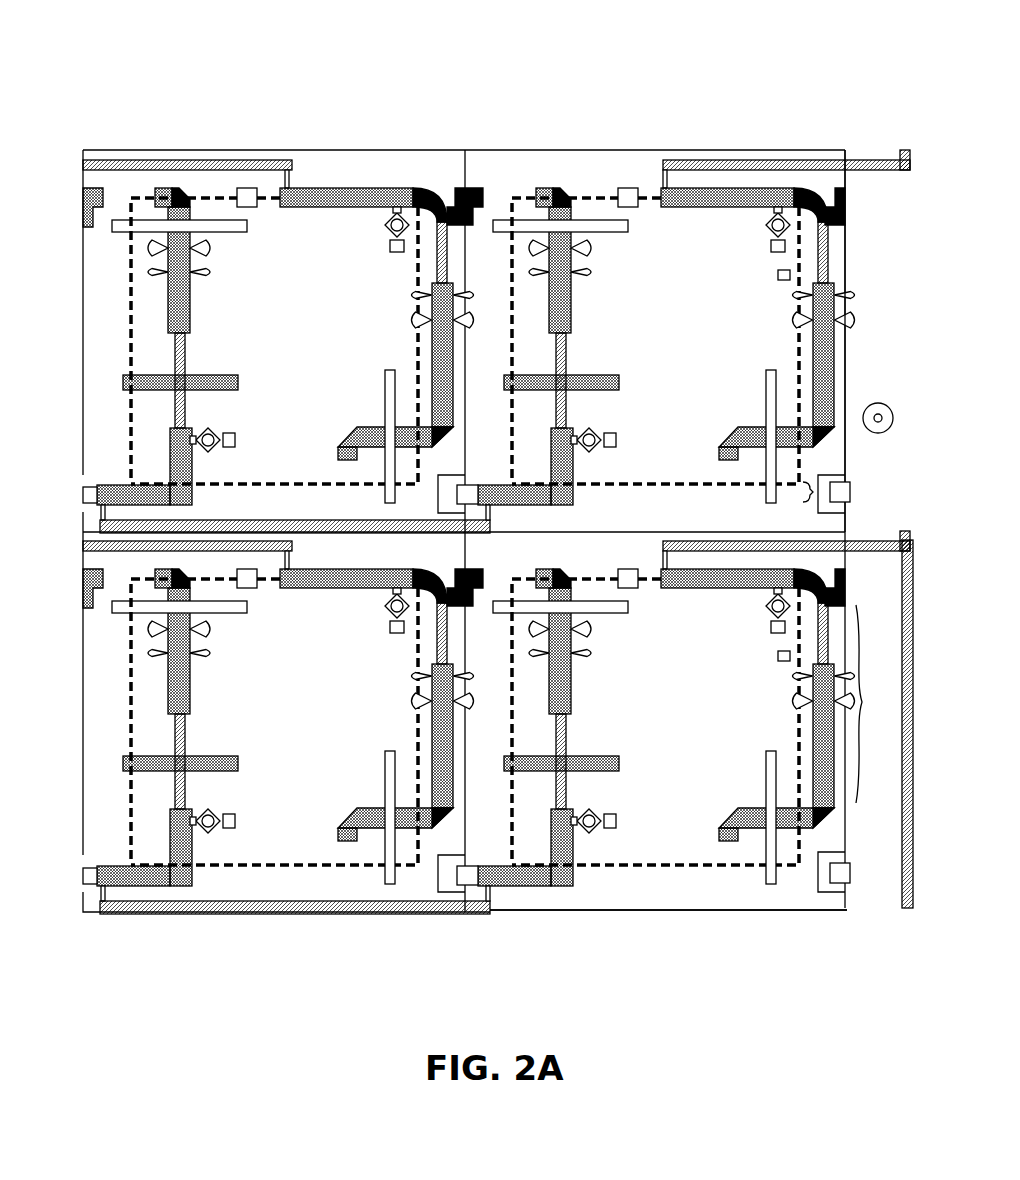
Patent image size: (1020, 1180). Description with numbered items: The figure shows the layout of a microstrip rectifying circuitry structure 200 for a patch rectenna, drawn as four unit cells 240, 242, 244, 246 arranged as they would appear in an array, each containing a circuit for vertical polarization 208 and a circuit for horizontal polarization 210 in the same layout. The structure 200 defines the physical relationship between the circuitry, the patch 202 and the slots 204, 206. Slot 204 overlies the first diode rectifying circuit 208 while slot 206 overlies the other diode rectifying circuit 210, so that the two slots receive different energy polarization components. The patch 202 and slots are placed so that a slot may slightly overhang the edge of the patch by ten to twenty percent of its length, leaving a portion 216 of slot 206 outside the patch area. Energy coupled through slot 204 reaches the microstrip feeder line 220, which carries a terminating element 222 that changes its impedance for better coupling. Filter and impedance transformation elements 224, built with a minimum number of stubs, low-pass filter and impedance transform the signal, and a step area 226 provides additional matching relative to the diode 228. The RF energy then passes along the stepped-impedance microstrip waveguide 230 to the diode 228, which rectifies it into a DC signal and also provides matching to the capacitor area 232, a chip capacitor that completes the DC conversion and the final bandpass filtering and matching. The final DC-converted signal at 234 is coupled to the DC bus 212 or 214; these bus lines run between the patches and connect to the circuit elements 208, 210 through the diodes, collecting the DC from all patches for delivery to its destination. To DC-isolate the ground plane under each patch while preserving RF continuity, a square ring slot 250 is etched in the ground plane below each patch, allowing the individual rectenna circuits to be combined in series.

The microstrip rectifying circuitry structure 200 is at (733, 43).
The patch 202 is at (288, 865).
The slot 204 is at (213, 220).
The slot 206 is at (392, 885).
The first diode rectifying circuit 208 is at (551, 172).
The diode rectifying circuit 210 is at (838, 250).
The DC bus 212 is at (783, 160).
The DC bus 214 is at (903, 820).
The overhanging portion of slot 216 is at (814, 490).
The microstrip feeder line 220 is at (170, 290).
The terminating element 222 is at (157, 188).
The filter and impedance transformation elements 224 is at (811, 722).
The step area 226 is at (172, 325).
The diode 228 is at (591, 832).
The microstrip waveguide 230 is at (177, 355).
The capacitor area 232 is at (631, 188).
The final DC-converted signal point 234 is at (492, 890).
The unit cell 240 is at (355, 150).
The unit cell 242 is at (845, 340).
The unit cell 244 is at (210, 895).
The unit cell 246 is at (694, 910).
The square ring slot 250 is at (878, 403).